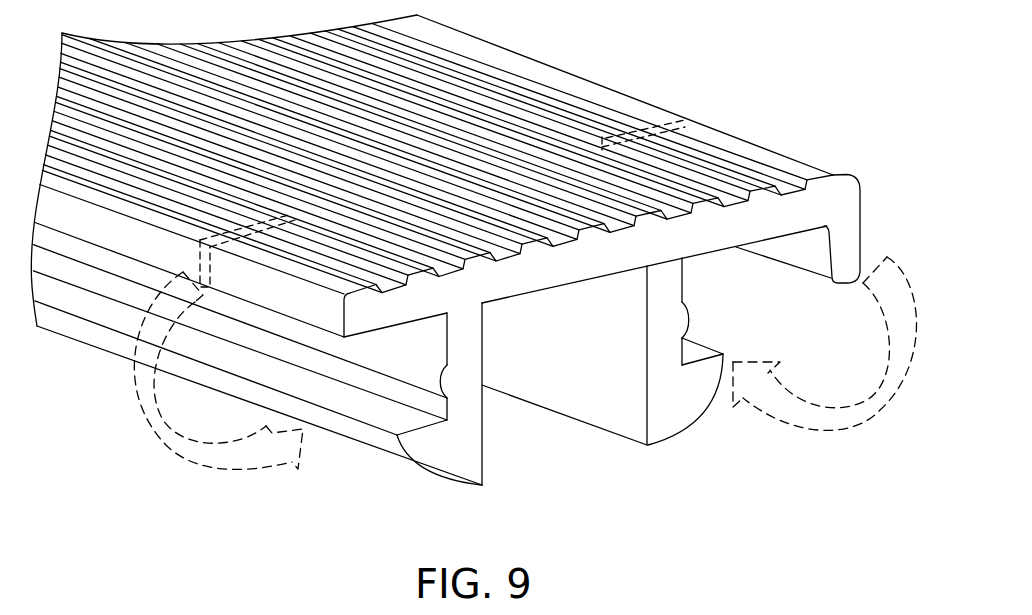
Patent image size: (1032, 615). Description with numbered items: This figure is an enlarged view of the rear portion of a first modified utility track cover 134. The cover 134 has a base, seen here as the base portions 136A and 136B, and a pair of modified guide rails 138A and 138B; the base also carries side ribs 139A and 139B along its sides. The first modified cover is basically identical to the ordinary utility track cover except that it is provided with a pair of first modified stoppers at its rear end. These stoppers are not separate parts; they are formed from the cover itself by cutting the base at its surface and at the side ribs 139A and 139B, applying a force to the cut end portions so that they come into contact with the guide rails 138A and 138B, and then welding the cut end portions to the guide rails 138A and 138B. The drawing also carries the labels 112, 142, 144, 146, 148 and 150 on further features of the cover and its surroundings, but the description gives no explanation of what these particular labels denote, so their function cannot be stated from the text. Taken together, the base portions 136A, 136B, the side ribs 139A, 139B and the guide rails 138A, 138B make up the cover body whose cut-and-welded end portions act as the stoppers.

The panel / extruded member 112 is at (700, 69).
The first modified utility track cover 134 is at (567, 73).
The first hook recess 136A is at (344, 312).
The second hook recess 136B is at (818, 205).
The modified guide rail 138A is at (484, 344).
The modified guide rail 138B is at (646, 367).
The side rib 139A is at (97, 227).
The side rib 139B is at (862, 212).
The hidden slot 142 is at (668, 200).
The first notch 144 is at (438, 377).
The curved bottom surface 146 is at (457, 484).
The second notch 148 is at (687, 317).
The curved foot surface 150 is at (692, 416).